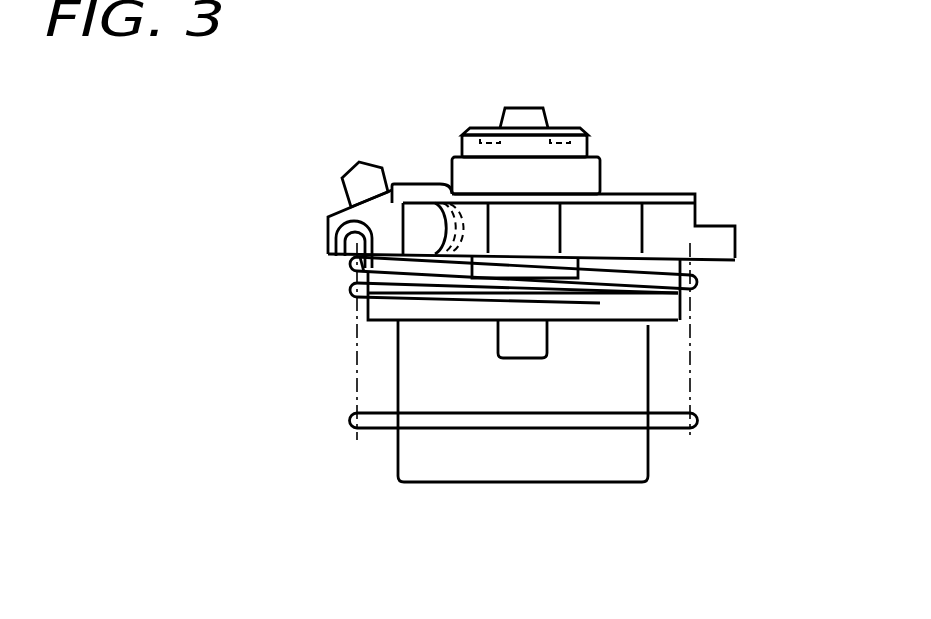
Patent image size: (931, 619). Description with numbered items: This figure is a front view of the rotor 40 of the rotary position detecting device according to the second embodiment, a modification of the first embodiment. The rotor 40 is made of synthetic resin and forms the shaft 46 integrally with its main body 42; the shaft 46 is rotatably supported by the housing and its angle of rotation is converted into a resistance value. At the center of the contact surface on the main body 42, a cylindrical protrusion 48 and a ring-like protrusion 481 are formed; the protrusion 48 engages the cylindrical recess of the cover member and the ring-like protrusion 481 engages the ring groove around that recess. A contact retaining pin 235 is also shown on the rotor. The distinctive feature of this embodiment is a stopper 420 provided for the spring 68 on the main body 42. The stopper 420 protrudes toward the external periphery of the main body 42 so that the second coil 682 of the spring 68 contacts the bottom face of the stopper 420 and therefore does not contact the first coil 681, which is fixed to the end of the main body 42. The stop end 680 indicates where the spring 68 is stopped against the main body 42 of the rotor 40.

The rotor 40 is at (517, 90).
The cylindrical protrusion 48 is at (530, 103).
The ring-like protrusion 481 is at (580, 129).
The main body 42 is at (738, 243).
The stopper 420 is at (523, 243).
The stop end 680 is at (417, 196).
The first coil 681 is at (333, 233).
The second coil 682 is at (331, 258).
The contact retaining pin 235 is at (358, 182).
The spring 68 is at (718, 441).
The shaft 46 is at (522, 472).